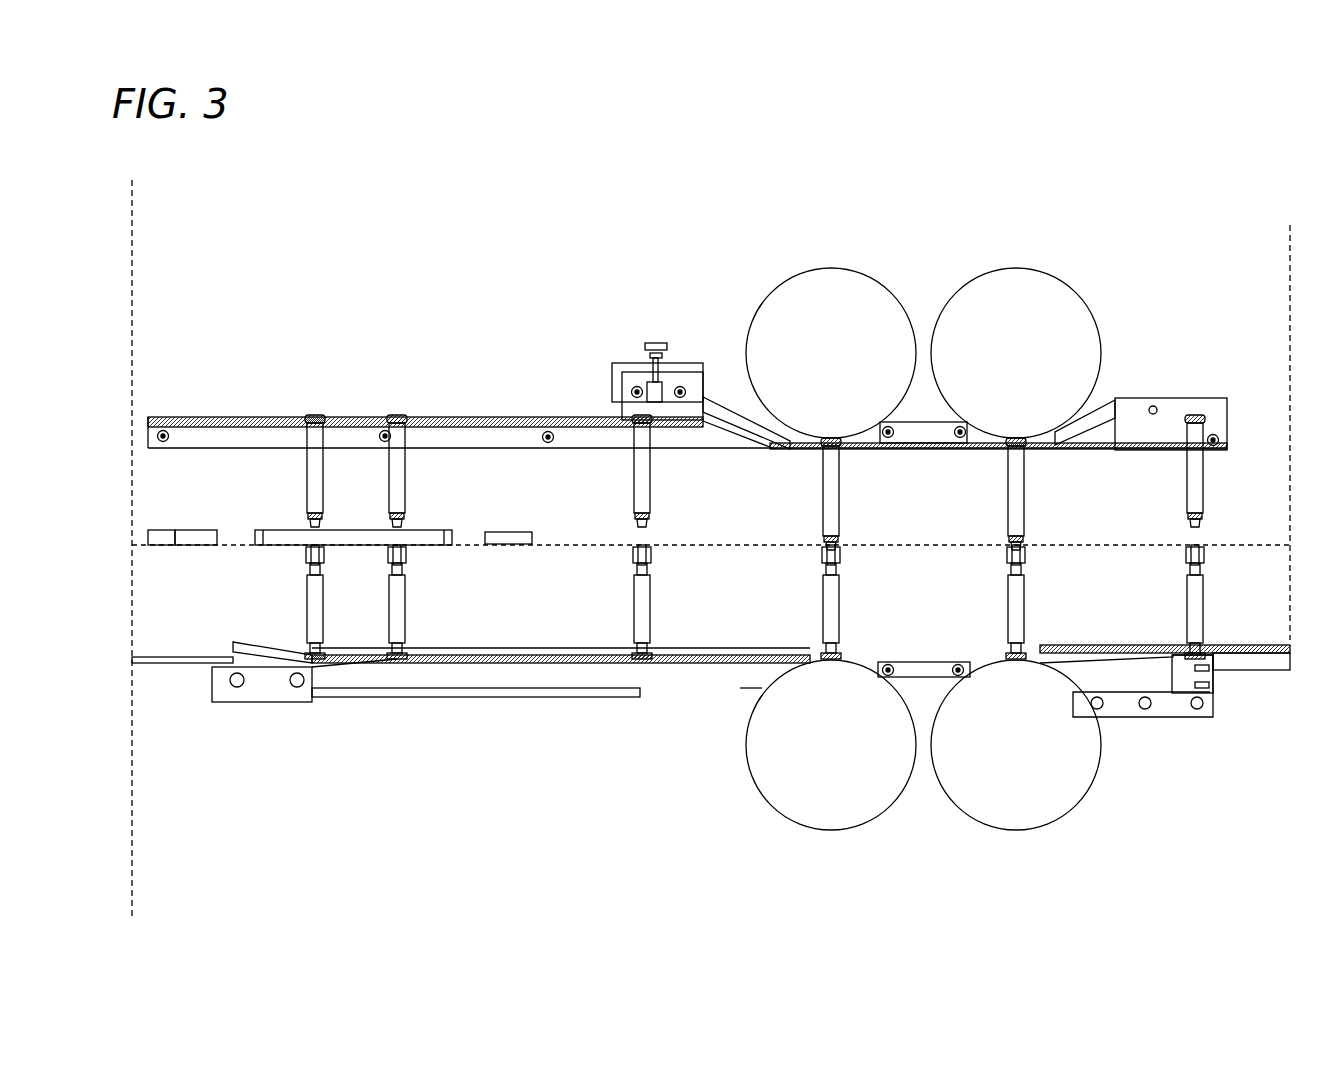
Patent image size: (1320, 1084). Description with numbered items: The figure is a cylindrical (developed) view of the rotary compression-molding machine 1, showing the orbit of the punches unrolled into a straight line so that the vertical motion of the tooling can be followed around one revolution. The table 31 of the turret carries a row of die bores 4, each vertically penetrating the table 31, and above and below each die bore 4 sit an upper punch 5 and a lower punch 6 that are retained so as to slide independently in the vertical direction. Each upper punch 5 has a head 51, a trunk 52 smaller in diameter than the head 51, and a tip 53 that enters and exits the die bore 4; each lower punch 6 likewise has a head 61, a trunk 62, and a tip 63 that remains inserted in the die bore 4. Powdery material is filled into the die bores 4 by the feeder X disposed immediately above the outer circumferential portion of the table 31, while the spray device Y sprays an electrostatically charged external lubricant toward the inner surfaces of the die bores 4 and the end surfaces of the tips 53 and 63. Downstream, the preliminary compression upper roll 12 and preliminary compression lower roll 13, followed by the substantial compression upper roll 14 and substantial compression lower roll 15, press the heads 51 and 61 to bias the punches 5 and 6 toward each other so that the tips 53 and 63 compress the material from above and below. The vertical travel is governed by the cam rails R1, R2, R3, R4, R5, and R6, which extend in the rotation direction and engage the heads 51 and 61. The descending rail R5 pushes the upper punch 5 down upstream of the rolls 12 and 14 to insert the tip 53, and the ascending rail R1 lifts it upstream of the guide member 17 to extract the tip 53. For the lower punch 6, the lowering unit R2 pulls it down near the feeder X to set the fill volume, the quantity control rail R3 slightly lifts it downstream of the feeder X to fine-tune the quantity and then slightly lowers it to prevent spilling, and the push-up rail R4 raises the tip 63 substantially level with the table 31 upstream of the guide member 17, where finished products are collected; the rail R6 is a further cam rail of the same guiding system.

The molding machine 1 is at (710, 170).
The die bore 4 is at (306, 555).
The upper punch 5 is at (298, 470).
The lower punch 6 is at (298, 603).
The preliminary compression upper roll 12 is at (830, 268).
The preliminary compression lower roll 13 is at (831, 830).
The substantial compression upper roll 14 is at (1016, 268).
The substantial compression lower roll 15 is at (1016, 830).
The guide member 17 is at (160, 530).
The table 31 is at (773, 545).
The head 51 is at (397, 412).
The trunk 52 is at (408, 488).
The tip 53 is at (405, 518).
The head 61 is at (397, 660).
The trunk 62 is at (410, 617).
The tip 63 is at (408, 565).
The ascending rail R1 is at (1143, 420).
The lowering unit R2 is at (270, 665).
The quantity control rail R3 is at (497, 662).
The push-up rail R4 is at (1127, 665).
The descending rail R5 is at (706, 420).
The cam rail R6 is at (356, 417).
The feeder X is at (352, 518).
The spray device Y is at (196, 520).